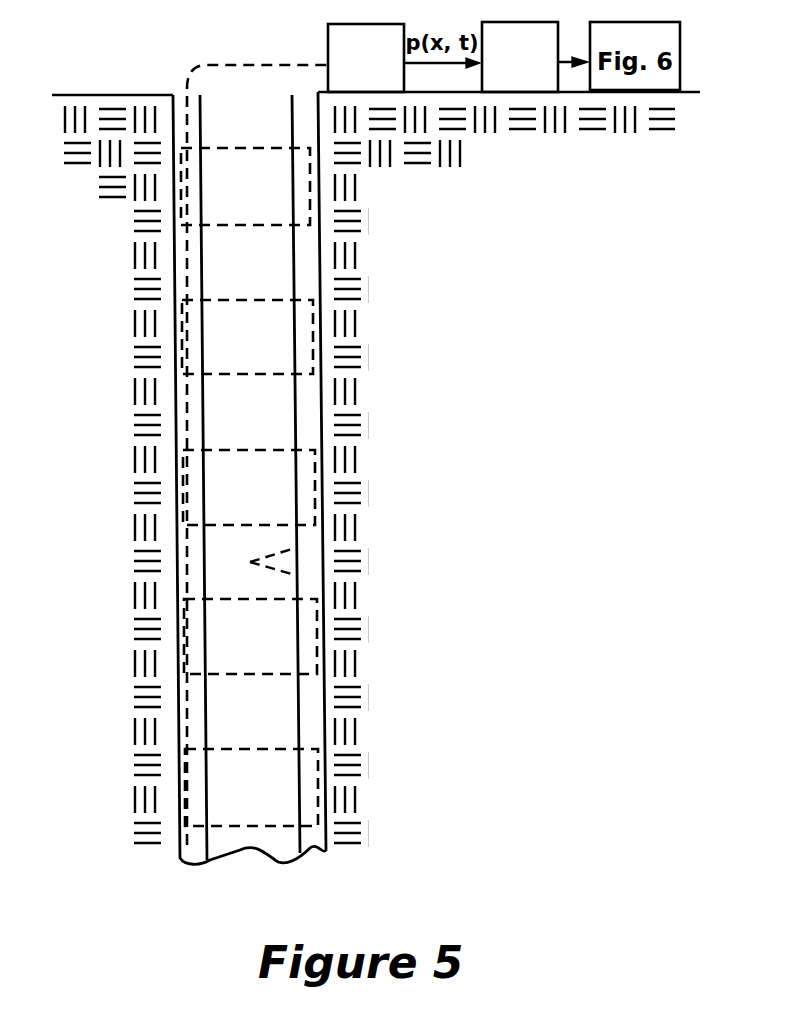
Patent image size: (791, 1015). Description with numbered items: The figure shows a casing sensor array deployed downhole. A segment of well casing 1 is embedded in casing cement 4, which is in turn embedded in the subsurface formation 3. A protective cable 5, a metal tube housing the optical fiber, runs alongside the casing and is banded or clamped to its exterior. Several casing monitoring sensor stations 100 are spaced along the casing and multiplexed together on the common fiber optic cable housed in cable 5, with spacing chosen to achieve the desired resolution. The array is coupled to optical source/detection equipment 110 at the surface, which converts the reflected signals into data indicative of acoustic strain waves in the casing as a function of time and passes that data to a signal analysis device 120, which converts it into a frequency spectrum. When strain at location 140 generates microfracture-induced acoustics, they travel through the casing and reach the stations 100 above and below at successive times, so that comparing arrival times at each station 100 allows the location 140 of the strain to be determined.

The well casing 1 is at (296, 278).
The subsurface formation 3 is at (64, 280).
The casing cement 4 is at (308, 248).
The protective cable 5 is at (190, 562).
The casing monitoring sensor stations 100 is at (314, 335).
The optical source/detection equipment 110 is at (346, 79).
The signal analysis device 120 is at (500, 78).
The location 140 is at (288, 566).